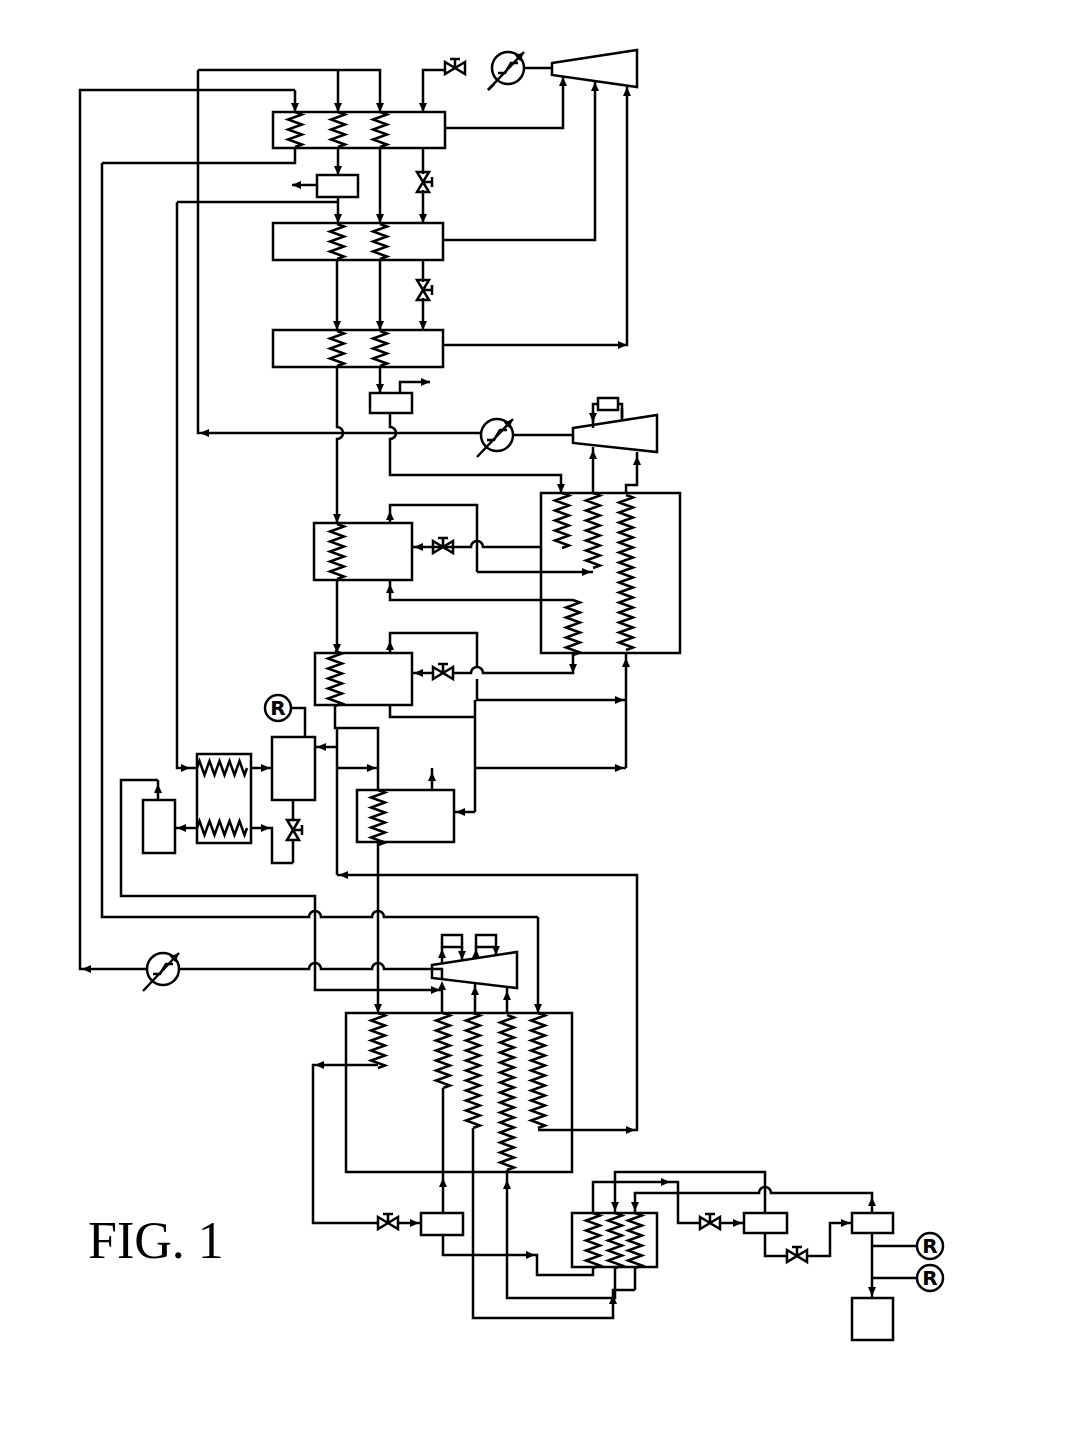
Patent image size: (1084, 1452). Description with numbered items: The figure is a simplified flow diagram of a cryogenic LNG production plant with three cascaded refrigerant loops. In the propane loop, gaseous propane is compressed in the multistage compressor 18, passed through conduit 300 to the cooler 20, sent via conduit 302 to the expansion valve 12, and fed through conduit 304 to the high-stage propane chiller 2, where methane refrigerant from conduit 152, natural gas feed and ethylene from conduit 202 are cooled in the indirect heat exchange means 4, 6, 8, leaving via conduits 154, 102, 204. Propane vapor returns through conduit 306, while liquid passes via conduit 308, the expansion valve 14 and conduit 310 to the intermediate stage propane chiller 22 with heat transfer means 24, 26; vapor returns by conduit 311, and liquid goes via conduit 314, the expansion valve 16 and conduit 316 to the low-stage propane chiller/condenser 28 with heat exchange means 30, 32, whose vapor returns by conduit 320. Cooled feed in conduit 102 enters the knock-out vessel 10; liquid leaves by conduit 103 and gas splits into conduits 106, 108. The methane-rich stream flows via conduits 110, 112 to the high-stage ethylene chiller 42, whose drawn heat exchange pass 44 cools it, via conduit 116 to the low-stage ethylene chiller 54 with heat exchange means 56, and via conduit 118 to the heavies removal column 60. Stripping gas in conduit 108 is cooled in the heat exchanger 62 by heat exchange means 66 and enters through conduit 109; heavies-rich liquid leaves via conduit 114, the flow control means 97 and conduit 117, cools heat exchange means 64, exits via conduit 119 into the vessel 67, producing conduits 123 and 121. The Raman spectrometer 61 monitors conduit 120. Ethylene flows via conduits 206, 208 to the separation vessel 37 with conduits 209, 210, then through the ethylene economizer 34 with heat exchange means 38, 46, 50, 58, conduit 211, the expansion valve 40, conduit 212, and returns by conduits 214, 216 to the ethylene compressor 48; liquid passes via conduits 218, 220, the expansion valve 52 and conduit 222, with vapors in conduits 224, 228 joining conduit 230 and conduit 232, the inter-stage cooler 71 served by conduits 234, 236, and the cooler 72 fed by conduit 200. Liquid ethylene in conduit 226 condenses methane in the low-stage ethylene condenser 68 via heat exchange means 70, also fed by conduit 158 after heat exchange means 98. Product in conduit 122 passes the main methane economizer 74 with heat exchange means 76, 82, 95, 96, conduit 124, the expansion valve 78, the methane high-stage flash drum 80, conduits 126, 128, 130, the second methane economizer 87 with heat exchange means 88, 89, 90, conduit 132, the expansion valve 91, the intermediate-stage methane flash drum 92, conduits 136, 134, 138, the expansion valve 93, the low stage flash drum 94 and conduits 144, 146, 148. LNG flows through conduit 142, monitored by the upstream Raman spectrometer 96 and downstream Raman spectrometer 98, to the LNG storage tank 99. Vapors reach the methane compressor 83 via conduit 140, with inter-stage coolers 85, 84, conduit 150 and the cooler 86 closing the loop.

The high-stage propane chiller 2 is at (273, 128).
The indirect heat exchange means 4 is at (302, 130).
The indirect heat exchange means 6 is at (345, 130).
The indirect heat exchange means 8 is at (388, 130).
The knock-out vessel 10 is at (347, 197).
The expansion valve 12 is at (488, 90).
The expansion valve 14 is at (434, 182).
The expansion valve 16 is at (434, 290).
The multistage compressor 18 is at (637, 66).
The cooler 20 is at (500, 50).
The intermediate stage propane chiller 22 is at (273, 242).
The indirect heat transfer means 24 is at (330, 243).
The indirect heat transfer means 26 is at (388, 243).
The low-stage propane chiller/condenser 28 is at (273, 349).
The indirect heat exchange means 30 is at (330, 350).
The indirect heat exchange means 32 is at (388, 350).
The ethylene economizer 34 is at (680, 575).
The separation vessel 37 is at (412, 402).
The indirect heat exchange means 38 is at (555, 522).
The expansion valve 40 is at (440, 558).
The high-stage ethylene chiller 42 is at (314, 545).
The heat exchange passage 44 is at (345, 556).
The indirect heat exchange means 46 is at (588, 560).
The ethylene compressor 48 is at (630, 418).
The indirect heat exchange means 50 is at (578, 628).
The expansion valve 52 is at (446, 682).
The low-stage ethylene chiller 54 is at (315, 668).
The indirect heat exchange means 56 is at (343, 685).
The indirect heat exchange means 58 is at (631, 628).
The heavies removal column 60 is at (272, 740).
The Raman spectrometer 61 is at (266, 703).
The heat exchanger 62 is at (240, 843).
The indirect heat exchange means 64 is at (225, 822).
The indirect heat exchange means 66 is at (225, 775).
The vessel 67 is at (152, 853).
The low-stage ethylene condenser 68 is at (454, 830).
The indirect heat exchange means 70 is at (385, 820).
The inter-stage cooler 71 is at (608, 398).
The cooler 72 is at (503, 418).
The main methane economizer 74 is at (346, 1040).
The indirect heat exchange means 76 is at (385, 1042).
The expansion valve 78 is at (380, 1218).
The methane high-stage flash drum 80 is at (425, 1235).
The indirect heat transfer means 82 is at (438, 1080).
The methane compressor 83 is at (505, 953).
The inter-stage cooler 84 is at (446, 940).
The inter-stage cooler 85 is at (488, 934).
The cooler 86 is at (152, 955).
The second methane economizer 87 is at (640, 1250).
The indirect heat exchange means 88 is at (585, 1248).
The indirect heat exchange means 89 is at (638, 1285).
The indirect heat exchange means 90 is at (620, 1265).
The expansion valve 91 is at (710, 1232).
The intermediate-stage methane flash drum 92 is at (787, 1222).
The expansion valve 93 is at (798, 1266).
The low stage flash drum 94 is at (878, 1212).
The indirect heat transfer means 95 is at (468, 1120).
The indirect heat exchange means / upstream Raman spectrometer 96 is at (512, 1152).
The flow control means 97 is at (297, 855).
The indirect heat exchange means / downstream Raman spectrometer 98 is at (545, 1105).
The LNG storage tank 99 is at (852, 1322).
The conduit 102 is at (336, 162).
The conduit 103 is at (298, 185).
The conduit 106 is at (300, 204).
The conduit 108 is at (180, 505).
The conduit 109 is at (255, 760).
The conduit 110 is at (337, 310).
The conduit 112 is at (337, 405).
The conduit 114 is at (300, 818).
The conduit 116 is at (337, 612).
The conduit 117 is at (280, 865).
The conduit 118 is at (337, 752).
The conduit 119 is at (196, 838).
The conduit 120 is at (380, 752).
The conduit 121 is at (140, 778).
The conduit 122 is at (382, 853).
The conduit 123 is at (162, 855).
The conduit 124 is at (313, 1130).
The conduit 126 is at (443, 1192).
The conduit 128 is at (430, 990).
The conduit 130 is at (443, 1258).
The conduit 132 is at (592, 1190).
The conduit 134 is at (765, 1258).
The conduit 136 is at (740, 1172).
The conduit 138 is at (470, 1305).
The conduit 140 is at (442, 998).
The conduit 142 is at (872, 1262).
The conduit 144 is at (830, 1192).
The conduit 146 is at (509, 1205).
The conduit 148 is at (512, 1003).
The conduit 150 is at (275, 975).
The conduit 152 is at (105, 975).
The conduit 154 is at (104, 448).
The conduit 158 is at (640, 945).
The conduit 200 is at (555, 430).
The conduit 202 is at (280, 437).
The conduit 204 is at (382, 205).
The conduit 206 is at (380, 270).
The conduit 208 is at (380, 375).
The conduit 209 is at (438, 383).
The conduit 210 is at (390, 480).
The conduit 211 is at (480, 570).
The conduit 212 is at (436, 545).
The conduit 214 is at (480, 503).
The conduit 216 is at (590, 465).
The conduit 218 is at (390, 604).
The conduit 220 is at (540, 668).
The conduit 222 is at (440, 668).
The conduit 224 is at (580, 703).
The conduit 226 is at (477, 747).
The conduit 228 is at (580, 775).
The conduit 230 is at (630, 685).
The conduit 232 is at (640, 478).
The conduit 234 is at (624, 408).
The conduit 236 is at (591, 410).
The conduit 300 is at (540, 63).
The conduit 302 is at (458, 58).
The conduit 304 is at (423, 62).
The conduit 306 is at (532, 128).
The conduit 308 is at (426, 168).
The conduit 310 is at (427, 206).
The conduit 311 is at (532, 240).
The conduit 314 is at (426, 276).
The conduit 316 is at (427, 312).
The conduit 320 is at (630, 200).